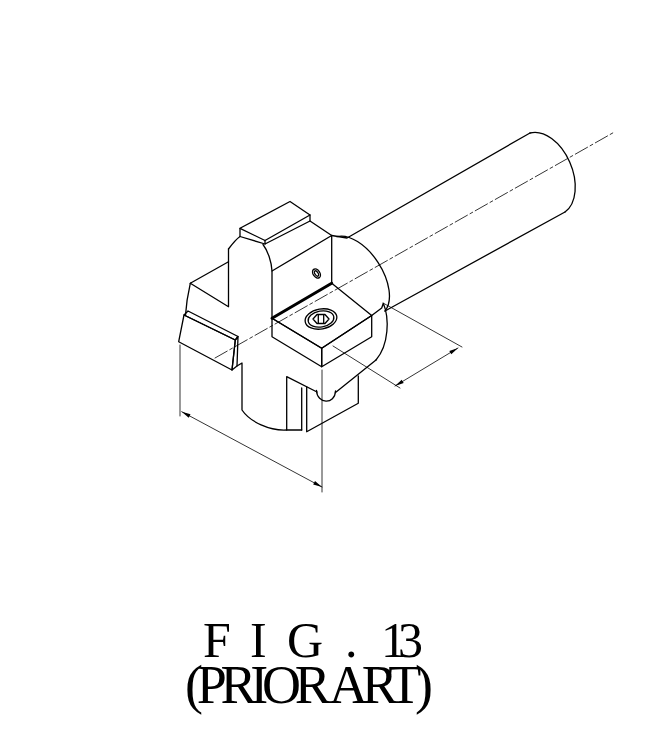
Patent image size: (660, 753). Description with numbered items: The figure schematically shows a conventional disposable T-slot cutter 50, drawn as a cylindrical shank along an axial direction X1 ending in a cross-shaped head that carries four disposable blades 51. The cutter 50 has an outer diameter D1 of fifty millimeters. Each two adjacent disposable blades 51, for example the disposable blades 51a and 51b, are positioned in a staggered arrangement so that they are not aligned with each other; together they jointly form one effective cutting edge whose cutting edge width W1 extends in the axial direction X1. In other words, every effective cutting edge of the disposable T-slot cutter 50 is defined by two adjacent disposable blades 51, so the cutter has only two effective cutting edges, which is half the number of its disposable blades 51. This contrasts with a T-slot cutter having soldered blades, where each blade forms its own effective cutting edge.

The disposable T-slot cutter 50 is at (353, 180).
The disposable blades 51 is at (188, 329).
The disposable blade 51a is at (333, 404).
The disposable blade 51b is at (267, 213).
The axial direction X1 is at (431, 235).
The outer diameter D1 is at (251, 418).
The cutting edge width W1 is at (397, 345).